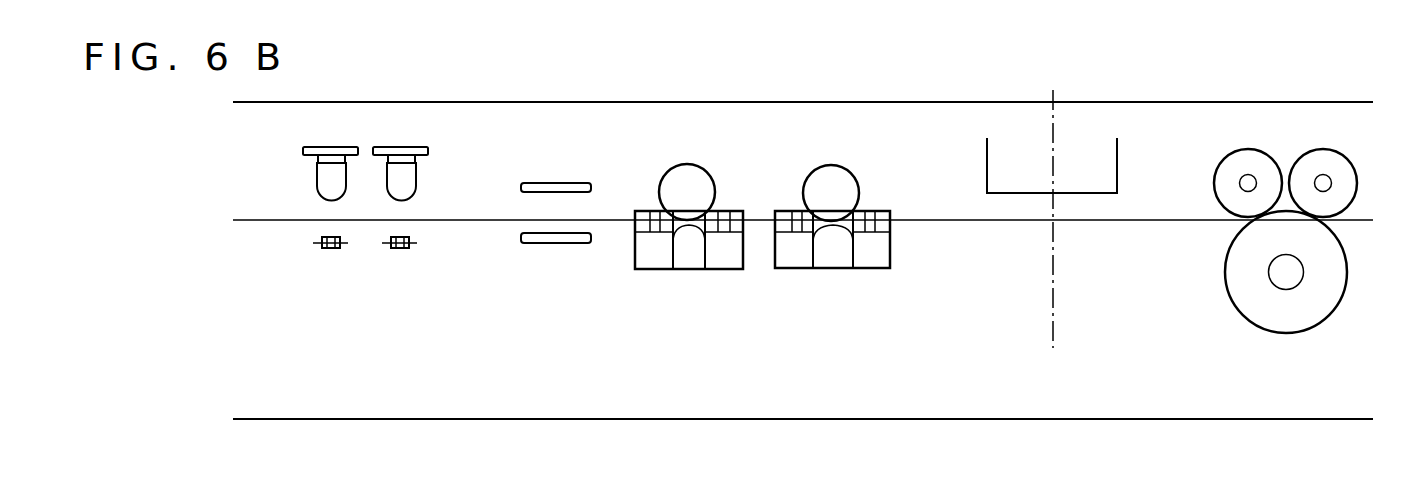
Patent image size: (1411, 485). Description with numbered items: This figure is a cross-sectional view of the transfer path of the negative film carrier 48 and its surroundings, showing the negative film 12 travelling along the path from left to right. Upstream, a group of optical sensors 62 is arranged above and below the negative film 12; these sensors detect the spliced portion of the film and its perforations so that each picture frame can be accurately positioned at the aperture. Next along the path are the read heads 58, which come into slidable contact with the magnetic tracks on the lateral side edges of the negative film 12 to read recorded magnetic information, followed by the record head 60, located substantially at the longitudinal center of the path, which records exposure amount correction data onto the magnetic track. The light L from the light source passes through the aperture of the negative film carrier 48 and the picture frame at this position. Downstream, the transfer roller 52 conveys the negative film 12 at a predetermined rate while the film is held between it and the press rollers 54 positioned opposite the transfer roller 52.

The negative film 12 is at (276, 220).
The negative film carrier 48 is at (912, 102).
The transfer roller 52 is at (1275, 334).
The press rollers 54 is at (1226, 160).
The read heads 58 is at (688, 270).
The record head 60 is at (833, 269).
The optical sensors 62 is at (333, 249).
The light L is at (1053, 274).